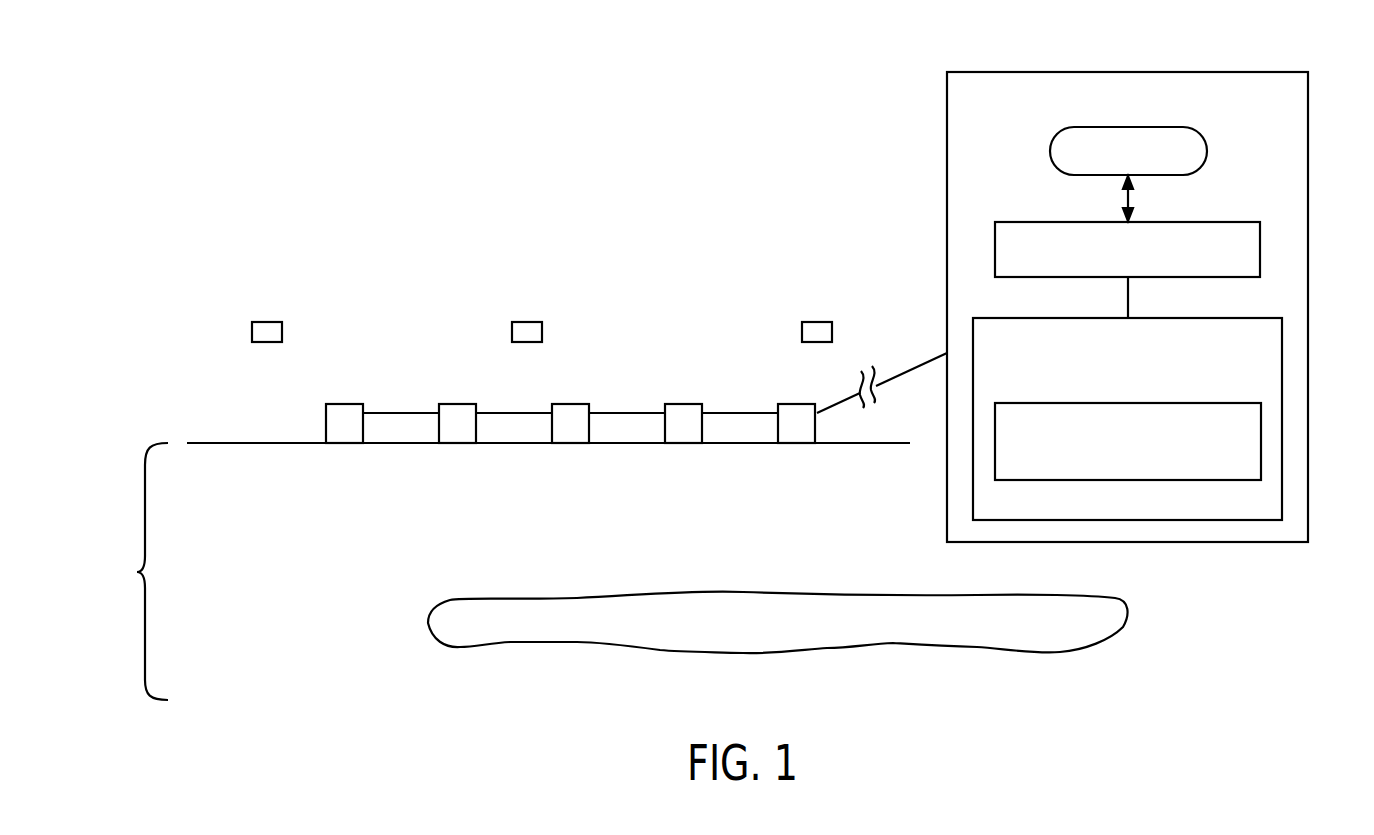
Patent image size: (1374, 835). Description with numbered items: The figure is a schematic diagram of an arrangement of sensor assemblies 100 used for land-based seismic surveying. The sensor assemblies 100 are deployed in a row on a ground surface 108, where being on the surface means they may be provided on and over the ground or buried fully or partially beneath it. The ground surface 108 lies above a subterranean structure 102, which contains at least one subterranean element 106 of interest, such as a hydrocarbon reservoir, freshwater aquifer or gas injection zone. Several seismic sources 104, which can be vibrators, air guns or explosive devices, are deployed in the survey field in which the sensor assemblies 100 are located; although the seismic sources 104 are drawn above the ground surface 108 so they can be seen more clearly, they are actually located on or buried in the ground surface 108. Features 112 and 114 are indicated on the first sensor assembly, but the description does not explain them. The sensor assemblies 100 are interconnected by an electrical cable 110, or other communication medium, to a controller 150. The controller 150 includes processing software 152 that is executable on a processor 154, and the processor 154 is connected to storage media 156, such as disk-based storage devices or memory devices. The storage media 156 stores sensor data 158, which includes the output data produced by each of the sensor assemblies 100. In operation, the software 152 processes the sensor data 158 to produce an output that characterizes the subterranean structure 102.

The sensor assembly 100 is at (458, 398).
The subterranean structure 102 is at (137, 572).
The seismic source 104 is at (267, 322).
The subterranean element 106 is at (782, 637).
The ground surface 108 is at (866, 443).
The electrical cable 110 is at (399, 414).
The sensor top 112 is at (326, 412).
The sensor base 114 is at (326, 433).
The controller 150 is at (1281, 72).
The processing software 152 is at (1207, 150).
The processor 154 is at (1245, 222).
The storage media 156 is at (1263, 318).
The sensor data 158 is at (1261, 440).